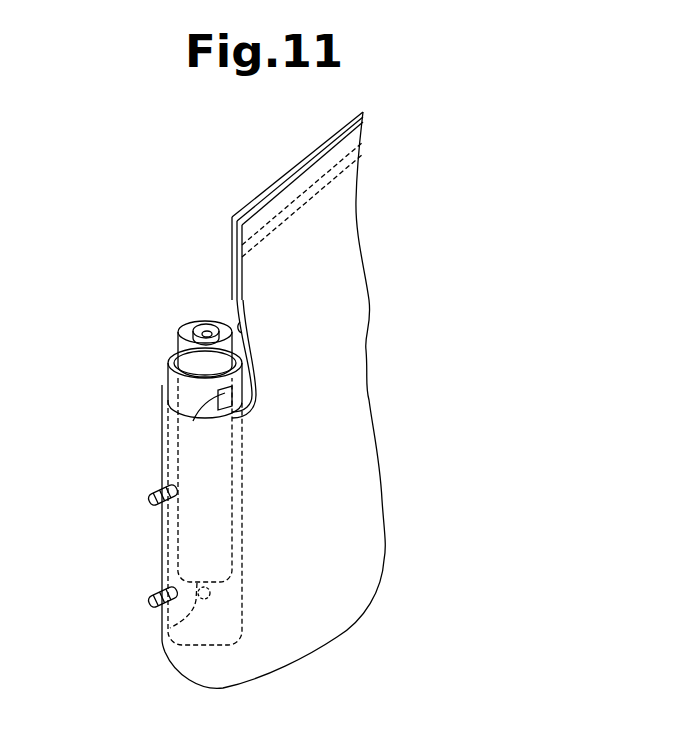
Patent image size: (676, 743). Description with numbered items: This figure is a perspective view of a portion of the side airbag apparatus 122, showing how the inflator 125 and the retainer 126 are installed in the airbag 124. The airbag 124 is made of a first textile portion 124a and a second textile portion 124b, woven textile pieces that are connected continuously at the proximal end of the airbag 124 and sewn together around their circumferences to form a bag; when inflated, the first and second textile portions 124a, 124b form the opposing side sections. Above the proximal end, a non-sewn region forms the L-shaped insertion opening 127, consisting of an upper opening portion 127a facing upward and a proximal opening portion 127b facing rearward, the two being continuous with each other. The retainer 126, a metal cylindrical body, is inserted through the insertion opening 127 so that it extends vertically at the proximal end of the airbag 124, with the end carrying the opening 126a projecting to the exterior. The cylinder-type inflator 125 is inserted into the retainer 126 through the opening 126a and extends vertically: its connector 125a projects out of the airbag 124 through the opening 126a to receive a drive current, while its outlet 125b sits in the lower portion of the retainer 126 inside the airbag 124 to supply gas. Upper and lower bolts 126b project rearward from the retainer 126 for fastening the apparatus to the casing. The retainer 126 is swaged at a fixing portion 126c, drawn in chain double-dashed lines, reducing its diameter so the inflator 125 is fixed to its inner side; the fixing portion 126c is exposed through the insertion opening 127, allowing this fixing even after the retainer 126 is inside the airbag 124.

The side airbag apparatus 122 is at (147, 207).
The airbag 124 is at (253, 197).
The first textile portion 124a is at (253, 263).
The second textile portion 124b is at (232, 282).
The inflator 125 is at (182, 333).
The connector 125a is at (193, 323).
The outlet 125b is at (170, 627).
The retainer 126 is at (192, 370).
The opening 126a is at (172, 392).
The bolts 126b is at (148, 504).
The fixing portion 126c is at (190, 424).
The insertion opening 127 is at (250, 368).
The upper opening portion 127a is at (248, 407).
The proximal opening portion 127b is at (246, 323).